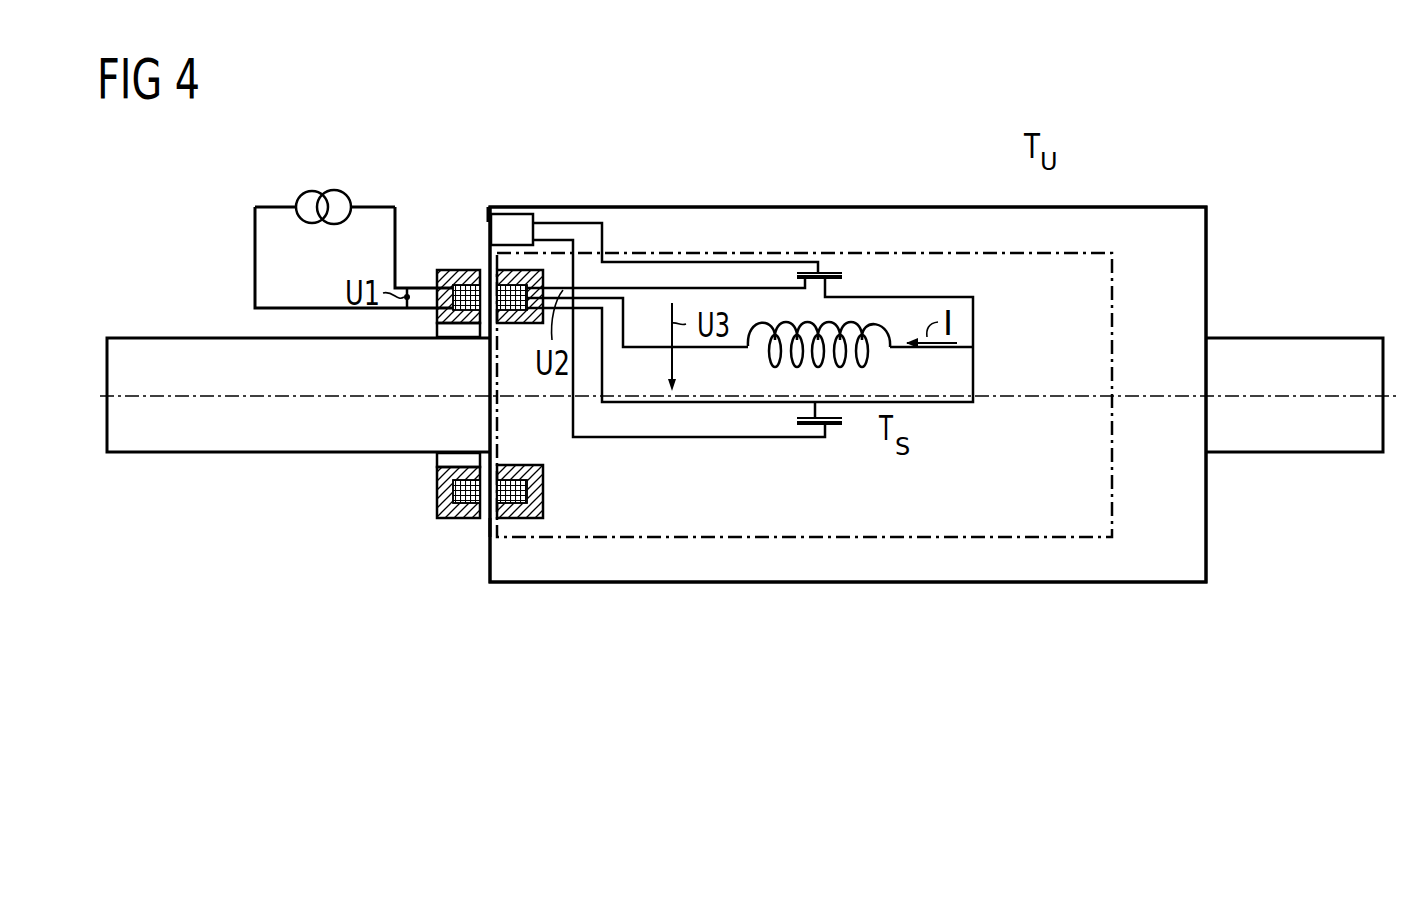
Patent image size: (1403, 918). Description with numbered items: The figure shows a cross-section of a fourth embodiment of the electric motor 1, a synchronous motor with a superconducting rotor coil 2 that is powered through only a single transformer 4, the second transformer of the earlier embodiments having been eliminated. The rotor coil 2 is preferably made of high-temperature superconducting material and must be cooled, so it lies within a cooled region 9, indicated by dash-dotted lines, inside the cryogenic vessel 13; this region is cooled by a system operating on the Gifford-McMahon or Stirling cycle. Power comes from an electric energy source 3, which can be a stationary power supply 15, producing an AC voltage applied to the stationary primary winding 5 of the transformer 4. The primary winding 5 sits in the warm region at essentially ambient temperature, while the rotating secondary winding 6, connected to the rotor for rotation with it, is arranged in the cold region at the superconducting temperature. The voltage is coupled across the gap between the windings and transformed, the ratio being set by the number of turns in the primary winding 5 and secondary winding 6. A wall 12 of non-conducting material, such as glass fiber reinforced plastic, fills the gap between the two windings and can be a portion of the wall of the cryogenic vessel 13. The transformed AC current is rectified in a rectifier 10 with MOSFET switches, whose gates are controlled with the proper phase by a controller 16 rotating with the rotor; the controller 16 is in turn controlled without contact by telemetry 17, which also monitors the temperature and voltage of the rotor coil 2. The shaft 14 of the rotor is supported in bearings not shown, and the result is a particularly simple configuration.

The electric motor 1 is at (830, 127).
The superconducting rotor coil 2 is at (850, 310).
The electric energy source 3 is at (313, 190).
The first transformer 4 is at (510, 280).
The primary winding 5 is at (438, 493).
The secondary winding 6 is at (522, 520).
The cooled region 9 is at (1013, 510).
The rectifier 10 is at (832, 267).
The wall 12 is at (488, 526).
The cryogenic vessel 13 is at (762, 585).
The shaft 14 is at (197, 425).
The stationary power supply 15 is at (320, 285).
The controller 16 is at (514, 226).
The telemetry 17 is at (480, 216).